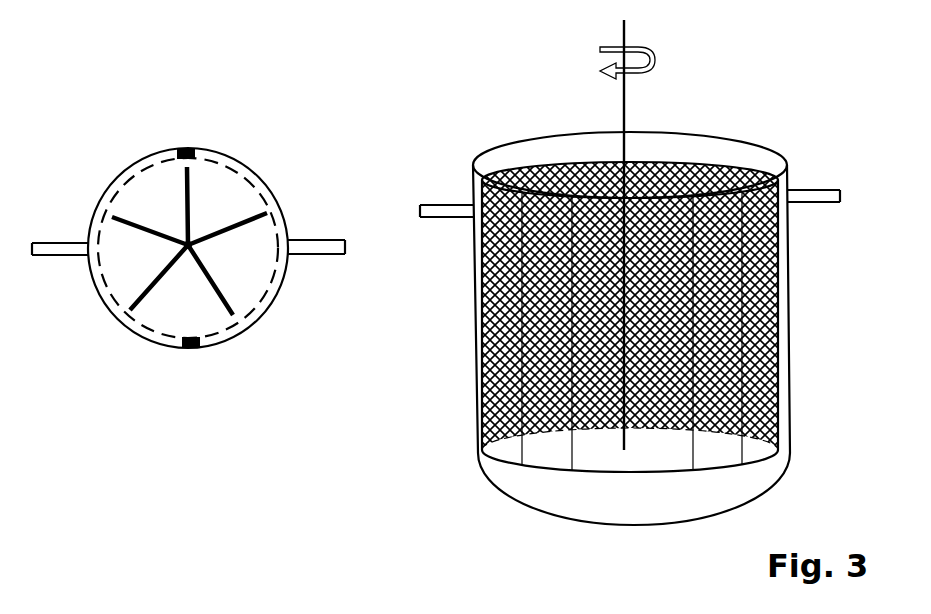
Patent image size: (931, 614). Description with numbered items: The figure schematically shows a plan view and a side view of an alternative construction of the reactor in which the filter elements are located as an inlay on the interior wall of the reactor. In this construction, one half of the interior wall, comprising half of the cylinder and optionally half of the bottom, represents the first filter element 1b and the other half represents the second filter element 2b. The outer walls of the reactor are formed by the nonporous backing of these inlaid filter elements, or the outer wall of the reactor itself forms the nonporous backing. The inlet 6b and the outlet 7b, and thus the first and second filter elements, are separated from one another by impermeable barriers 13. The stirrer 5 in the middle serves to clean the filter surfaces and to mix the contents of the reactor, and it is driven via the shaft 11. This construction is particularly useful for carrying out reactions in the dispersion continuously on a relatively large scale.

The first filter element 1b is at (118, 188).
The second filter element 2b is at (257, 188).
The stirrer 5 is at (222, 232).
The shaft 11 is at (186, 242).
The impermeable barriers 13 is at (192, 250).
The inlet 6b is at (252, 245).
The outlet 7b is at (563, 236).